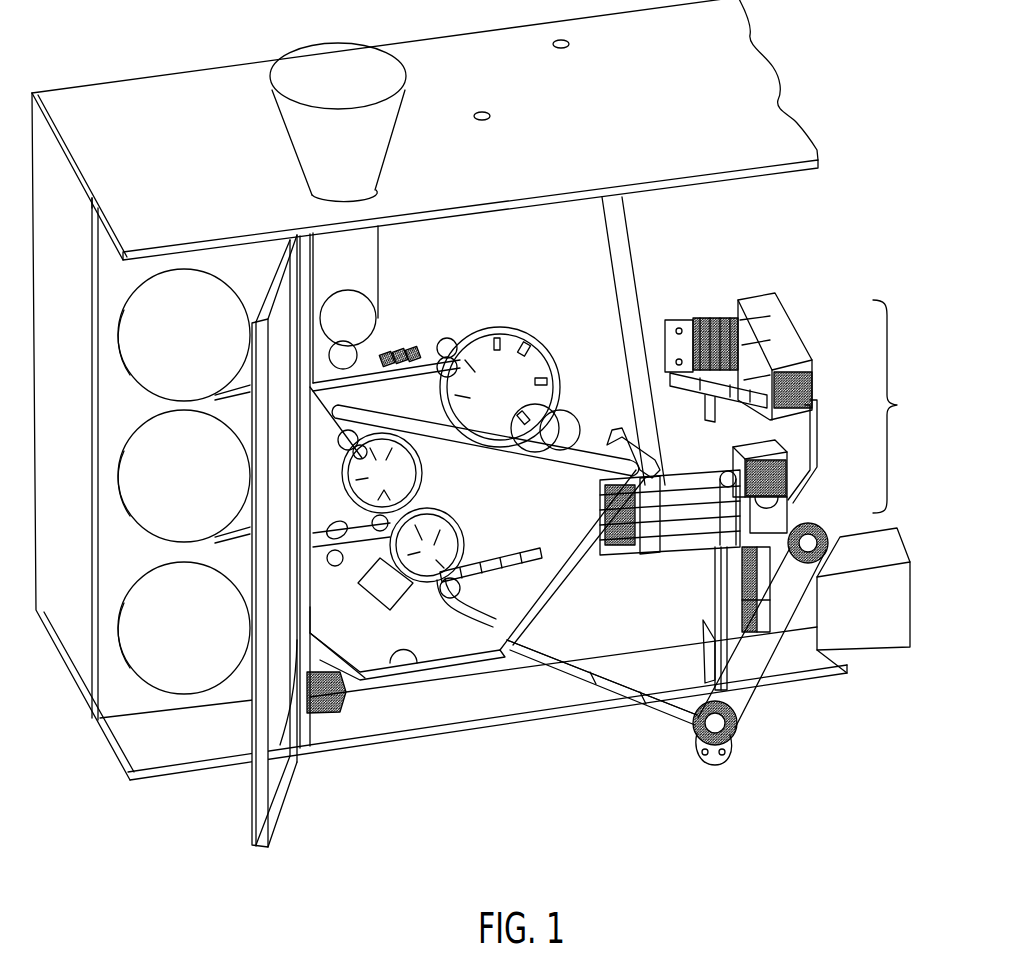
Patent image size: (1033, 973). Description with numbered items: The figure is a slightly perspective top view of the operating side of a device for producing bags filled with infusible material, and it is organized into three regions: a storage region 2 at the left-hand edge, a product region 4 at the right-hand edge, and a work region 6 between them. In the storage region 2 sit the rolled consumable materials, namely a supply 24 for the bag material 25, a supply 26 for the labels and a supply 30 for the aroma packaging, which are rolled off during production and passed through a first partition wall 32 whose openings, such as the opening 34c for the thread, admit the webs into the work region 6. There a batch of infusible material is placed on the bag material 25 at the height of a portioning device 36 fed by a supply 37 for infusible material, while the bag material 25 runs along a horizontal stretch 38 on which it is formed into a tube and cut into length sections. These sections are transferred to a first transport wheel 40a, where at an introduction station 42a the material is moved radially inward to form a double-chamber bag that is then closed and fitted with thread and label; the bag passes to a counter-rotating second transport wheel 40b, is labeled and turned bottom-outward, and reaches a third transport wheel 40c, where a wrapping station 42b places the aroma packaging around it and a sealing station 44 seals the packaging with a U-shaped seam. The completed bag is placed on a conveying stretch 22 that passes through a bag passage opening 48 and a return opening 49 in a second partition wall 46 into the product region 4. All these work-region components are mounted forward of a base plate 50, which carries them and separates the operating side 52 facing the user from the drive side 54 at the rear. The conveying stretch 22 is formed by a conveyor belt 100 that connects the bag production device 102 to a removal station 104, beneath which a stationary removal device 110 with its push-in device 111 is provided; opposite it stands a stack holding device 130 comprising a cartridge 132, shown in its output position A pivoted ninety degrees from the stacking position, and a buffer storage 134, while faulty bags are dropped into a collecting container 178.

The storage region 2 is at (175, 245).
The product region 4 is at (853, 152).
The work region 6 is at (457, 215).
The conveying stretch 22 is at (820, 518).
The supply for bag material 24 is at (189, 345).
The bag material 25 is at (366, 362).
The supply for labels 26 is at (189, 486).
The supply for aroma packaging 30 is at (189, 638).
The first partition wall 32 is at (272, 250).
The opening for thread 34c is at (583, 470).
The portioning device 36 is at (356, 275).
The supply for infusible material 37 is at (352, 155).
The horizontal stretch 38 is at (395, 352).
The first transport wheel 40a is at (532, 340).
The second transport wheel 40b is at (422, 477).
The third transport wheel 40c is at (464, 538).
The introduction station 42a is at (480, 340).
The wrapping station 42b is at (352, 548).
The sealing station 44 is at (390, 606).
The second partition wall 46 is at (612, 230).
The bag passage opening 48 is at (542, 556).
The return opening 49 is at (502, 612).
The base plate 50 is at (534, 253).
The operating side 52 is at (488, 225).
The drive side 54 is at (105, 75).
The conveyor belt 100 is at (790, 635).
The bag production device 102 is at (712, 210).
The removal station 104 is at (820, 292).
The removal device 110 is at (705, 565).
The push-in device 111 is at (602, 653).
The stack holding device 130 is at (906, 406).
The cartridge 132 is at (776, 296).
The buffer storage 134 is at (730, 448).
The collecting container 178 is at (876, 637).
The output position A is at (812, 338).